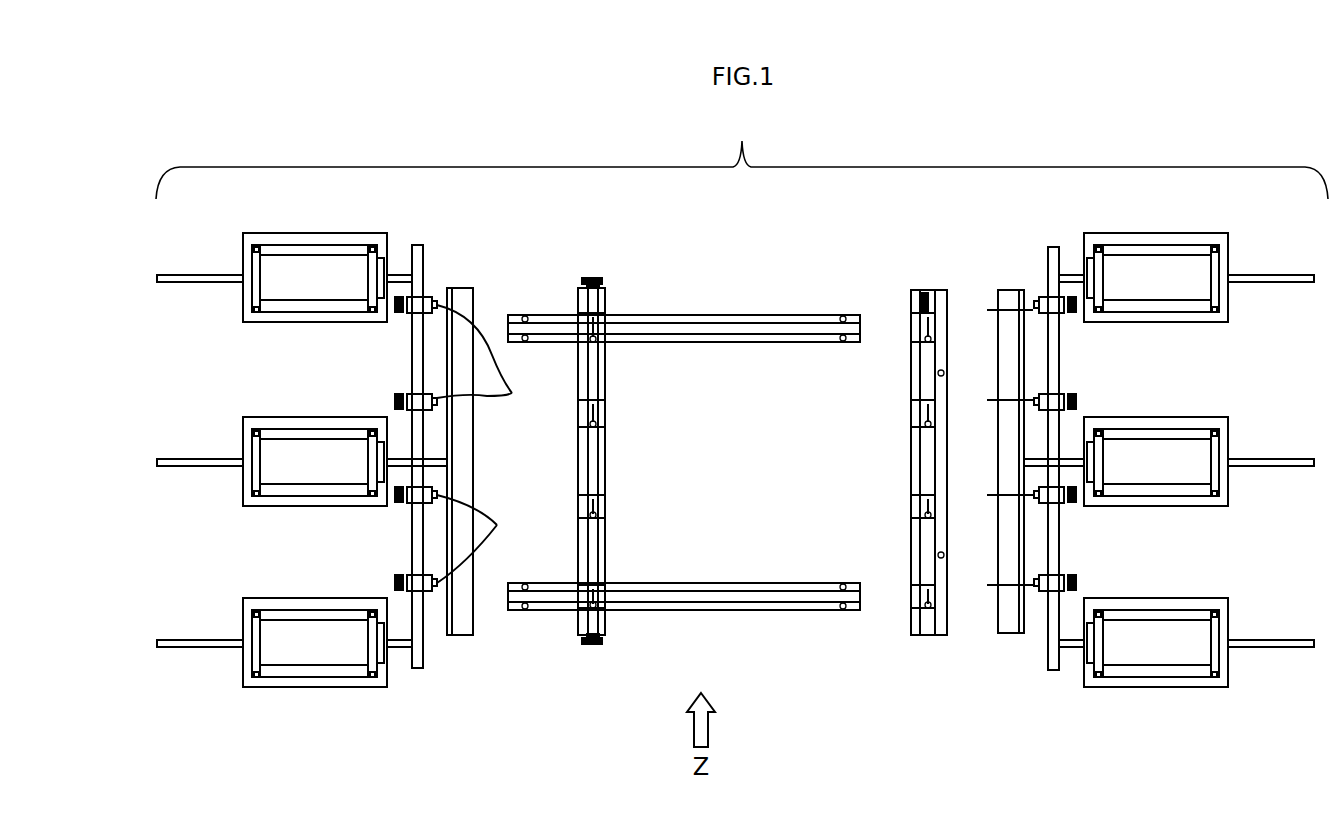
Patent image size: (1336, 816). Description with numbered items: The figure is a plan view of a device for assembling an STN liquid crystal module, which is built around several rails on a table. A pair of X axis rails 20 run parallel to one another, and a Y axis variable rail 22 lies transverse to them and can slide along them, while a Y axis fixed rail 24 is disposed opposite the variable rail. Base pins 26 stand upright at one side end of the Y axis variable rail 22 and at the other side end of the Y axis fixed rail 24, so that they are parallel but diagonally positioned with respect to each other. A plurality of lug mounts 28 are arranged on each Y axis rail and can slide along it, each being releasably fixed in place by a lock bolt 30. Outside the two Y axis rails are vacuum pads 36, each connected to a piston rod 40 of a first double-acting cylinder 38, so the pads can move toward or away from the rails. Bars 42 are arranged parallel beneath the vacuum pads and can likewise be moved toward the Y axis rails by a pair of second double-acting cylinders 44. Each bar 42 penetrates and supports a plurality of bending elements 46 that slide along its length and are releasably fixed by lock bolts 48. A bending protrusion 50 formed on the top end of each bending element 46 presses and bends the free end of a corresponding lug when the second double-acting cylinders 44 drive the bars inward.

The X axis rail 20 is at (737, 314).
The Y axis variable rail 22 is at (600, 297).
The Y axis fixed rail 24 is at (915, 290).
The base pin 26 is at (604, 639).
The lug mount 28 is at (585, 322).
The lock bolt 30 is at (596, 341).
The vacuum pad 36 is at (463, 628).
The first double-acting cylinder 38 is at (319, 437).
The piston rod 40 is at (401, 456).
The bar 42 is at (418, 246).
The second double-acting cylinder 44 is at (319, 258).
The bending element 46 is at (420, 305).
The lock bolt 48 is at (397, 305).
The bending protrusion 50 is at (504, 393).